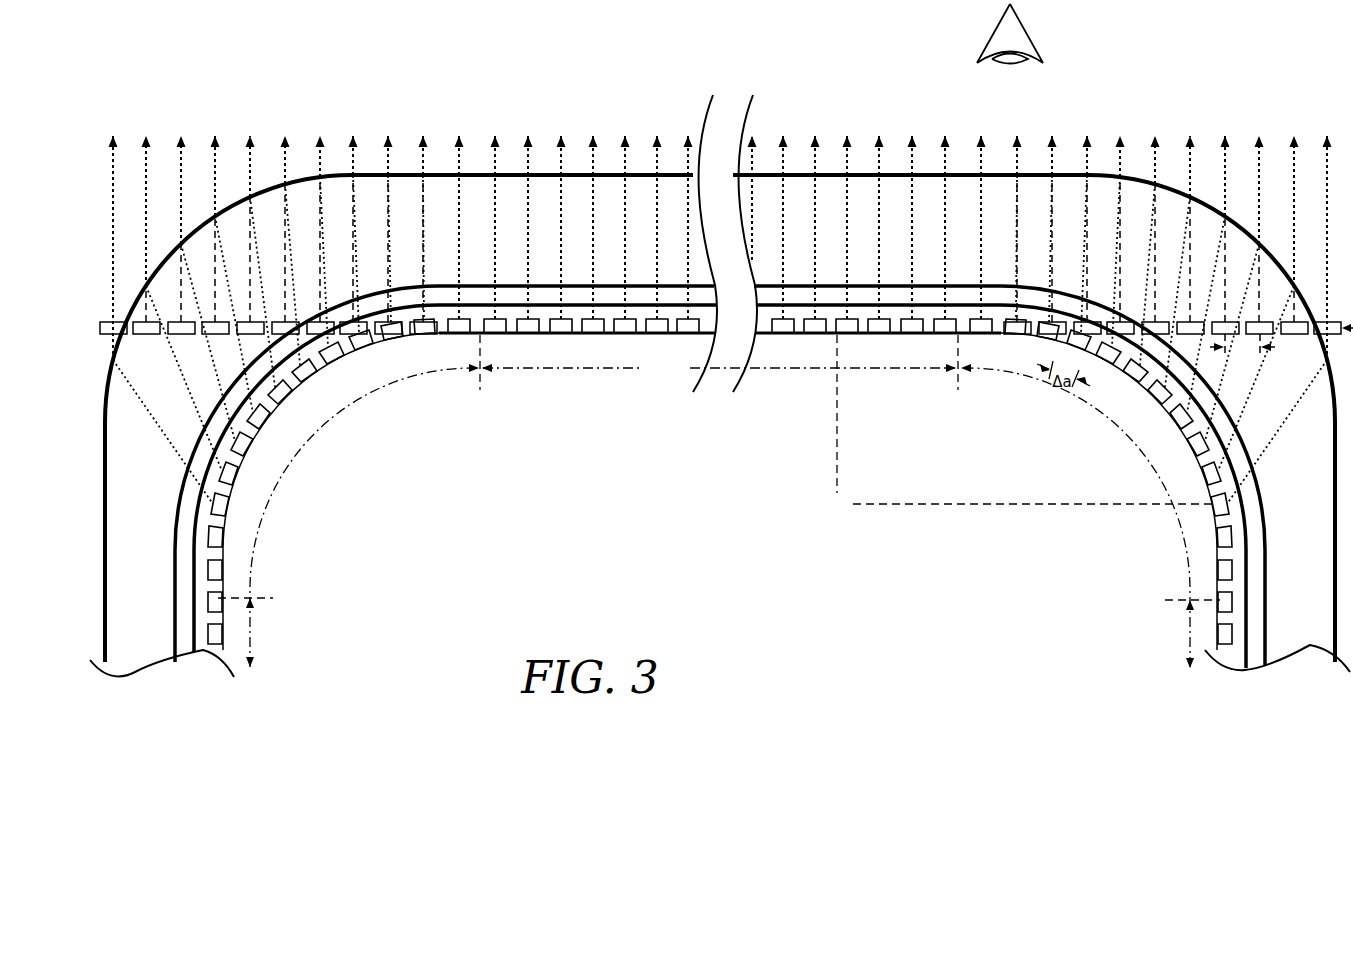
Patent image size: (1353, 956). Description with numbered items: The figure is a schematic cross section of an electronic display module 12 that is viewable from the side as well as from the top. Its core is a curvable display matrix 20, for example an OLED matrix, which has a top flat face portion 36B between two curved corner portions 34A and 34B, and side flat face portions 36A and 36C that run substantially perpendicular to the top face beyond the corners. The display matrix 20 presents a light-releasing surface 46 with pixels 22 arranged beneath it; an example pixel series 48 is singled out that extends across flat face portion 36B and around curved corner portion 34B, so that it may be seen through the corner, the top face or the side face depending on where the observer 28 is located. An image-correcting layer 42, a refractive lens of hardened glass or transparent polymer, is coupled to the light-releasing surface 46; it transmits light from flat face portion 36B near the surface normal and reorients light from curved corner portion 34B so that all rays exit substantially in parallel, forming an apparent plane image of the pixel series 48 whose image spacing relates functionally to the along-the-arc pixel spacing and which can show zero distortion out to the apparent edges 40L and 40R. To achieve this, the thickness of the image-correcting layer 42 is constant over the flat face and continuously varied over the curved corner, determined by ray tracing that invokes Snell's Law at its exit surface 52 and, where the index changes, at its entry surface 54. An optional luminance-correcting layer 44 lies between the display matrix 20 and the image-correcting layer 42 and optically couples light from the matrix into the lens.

The electronic display module 12 is at (694, 536).
The display matrix 20 is at (205, 597).
The pixels 22 is at (1230, 550).
The observer 28 is at (1001, 41).
The curved corner portion 34A is at (364, 515).
The curved corner portion 34B is at (1075, 515).
The flat face portion 36A is at (245, 632).
The flat face portion 36B is at (719, 362).
The flat face portion 36C is at (1192, 634).
The apparent edge 40L is at (394, 308).
The apparent edge 40R is at (1051, 308).
The image-correcting layer 42 is at (1297, 450).
The luminance-correcting layer 44 is at (183, 573).
The light-releasing surface 46 is at (1242, 520).
The pixel series 48 is at (1019, 424).
The exit surface 52 is at (103, 486).
The entry surface 54 is at (187, 472).